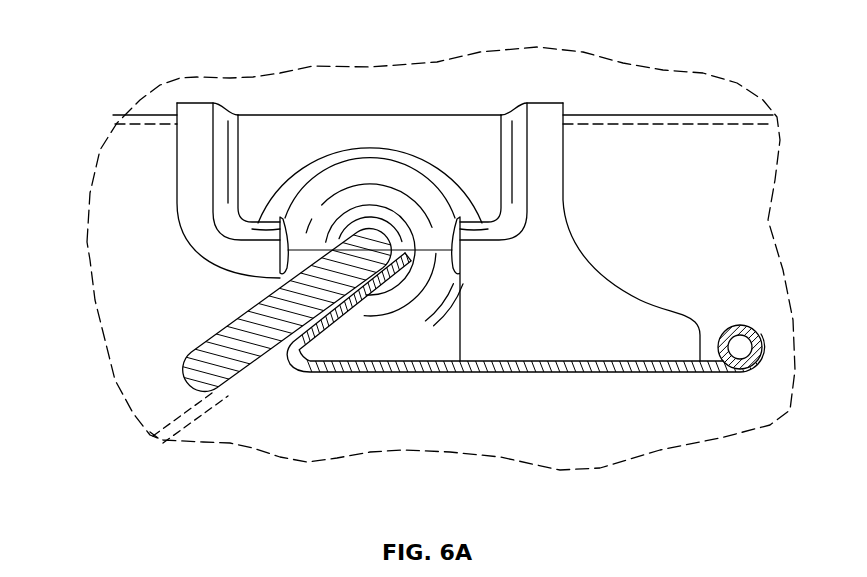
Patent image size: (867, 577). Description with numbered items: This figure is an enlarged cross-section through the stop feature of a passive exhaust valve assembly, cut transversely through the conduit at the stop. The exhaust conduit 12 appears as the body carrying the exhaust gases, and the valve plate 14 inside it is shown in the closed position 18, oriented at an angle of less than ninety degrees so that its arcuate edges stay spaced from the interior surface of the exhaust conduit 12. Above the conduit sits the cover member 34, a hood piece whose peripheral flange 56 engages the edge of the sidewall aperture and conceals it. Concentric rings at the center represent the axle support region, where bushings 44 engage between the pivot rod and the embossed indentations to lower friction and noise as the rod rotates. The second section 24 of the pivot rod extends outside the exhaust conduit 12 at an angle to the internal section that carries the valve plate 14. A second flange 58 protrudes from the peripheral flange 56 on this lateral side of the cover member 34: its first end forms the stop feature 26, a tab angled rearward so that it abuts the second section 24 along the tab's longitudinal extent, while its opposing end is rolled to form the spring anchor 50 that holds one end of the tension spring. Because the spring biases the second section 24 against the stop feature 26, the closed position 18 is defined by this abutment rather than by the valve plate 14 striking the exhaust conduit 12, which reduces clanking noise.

The exhaust conduit 12 is at (703, 115).
The valve plate 14 is at (203, 420).
The closed position 18 is at (137, 448).
The second section of the pivot rod 24 is at (237, 307).
The stop feature 26 is at (345, 316).
The cover member 34 is at (453, 136).
The bushings 44 is at (345, 230).
The spring anchor 50 is at (745, 328).
The peripheral flange 56 is at (547, 117).
The second flange 58 is at (558, 361).